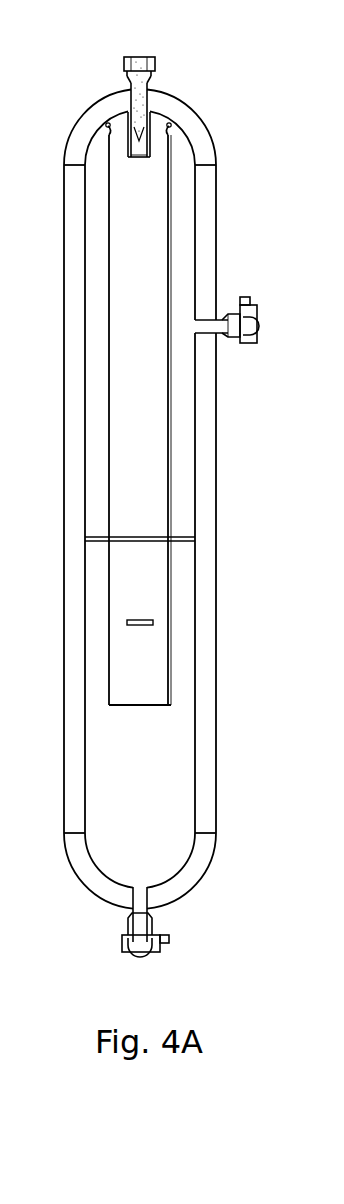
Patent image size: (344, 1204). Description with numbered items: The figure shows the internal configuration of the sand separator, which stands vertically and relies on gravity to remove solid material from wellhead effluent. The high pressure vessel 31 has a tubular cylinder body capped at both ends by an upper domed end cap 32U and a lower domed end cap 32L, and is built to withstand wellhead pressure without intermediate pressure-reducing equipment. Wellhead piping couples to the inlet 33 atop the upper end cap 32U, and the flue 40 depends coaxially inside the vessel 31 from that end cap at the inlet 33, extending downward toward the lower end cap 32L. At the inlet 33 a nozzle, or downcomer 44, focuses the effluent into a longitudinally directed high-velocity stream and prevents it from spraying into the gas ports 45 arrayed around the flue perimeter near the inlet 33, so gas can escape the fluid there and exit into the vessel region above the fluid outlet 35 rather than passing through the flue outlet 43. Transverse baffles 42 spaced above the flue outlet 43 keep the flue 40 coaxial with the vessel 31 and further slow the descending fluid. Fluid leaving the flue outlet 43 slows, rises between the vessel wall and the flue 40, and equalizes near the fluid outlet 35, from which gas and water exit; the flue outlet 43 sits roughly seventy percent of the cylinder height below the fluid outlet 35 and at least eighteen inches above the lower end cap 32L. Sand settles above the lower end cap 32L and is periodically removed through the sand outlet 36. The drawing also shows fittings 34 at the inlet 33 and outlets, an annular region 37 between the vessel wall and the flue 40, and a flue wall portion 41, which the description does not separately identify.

The high pressure vessel 31 is at (215, 740).
The upper domed end cap 32U is at (88, 108).
The lower domed end cap 32L is at (93, 898).
The inlet 33 is at (153, 87).
The fitting nut 34 is at (157, 65).
The fluid outlet 35 is at (213, 327).
The sand outlet 36 is at (150, 918).
The annular space 37 is at (190, 775).
The flue 40 is at (172, 202).
The inner tube wall 41 is at (170, 450).
The transverse baffles 42 is at (182, 542).
The flue outlet 43 is at (152, 707).
The downcomer 44 is at (148, 127).
The gas ports 45 is at (170, 133).